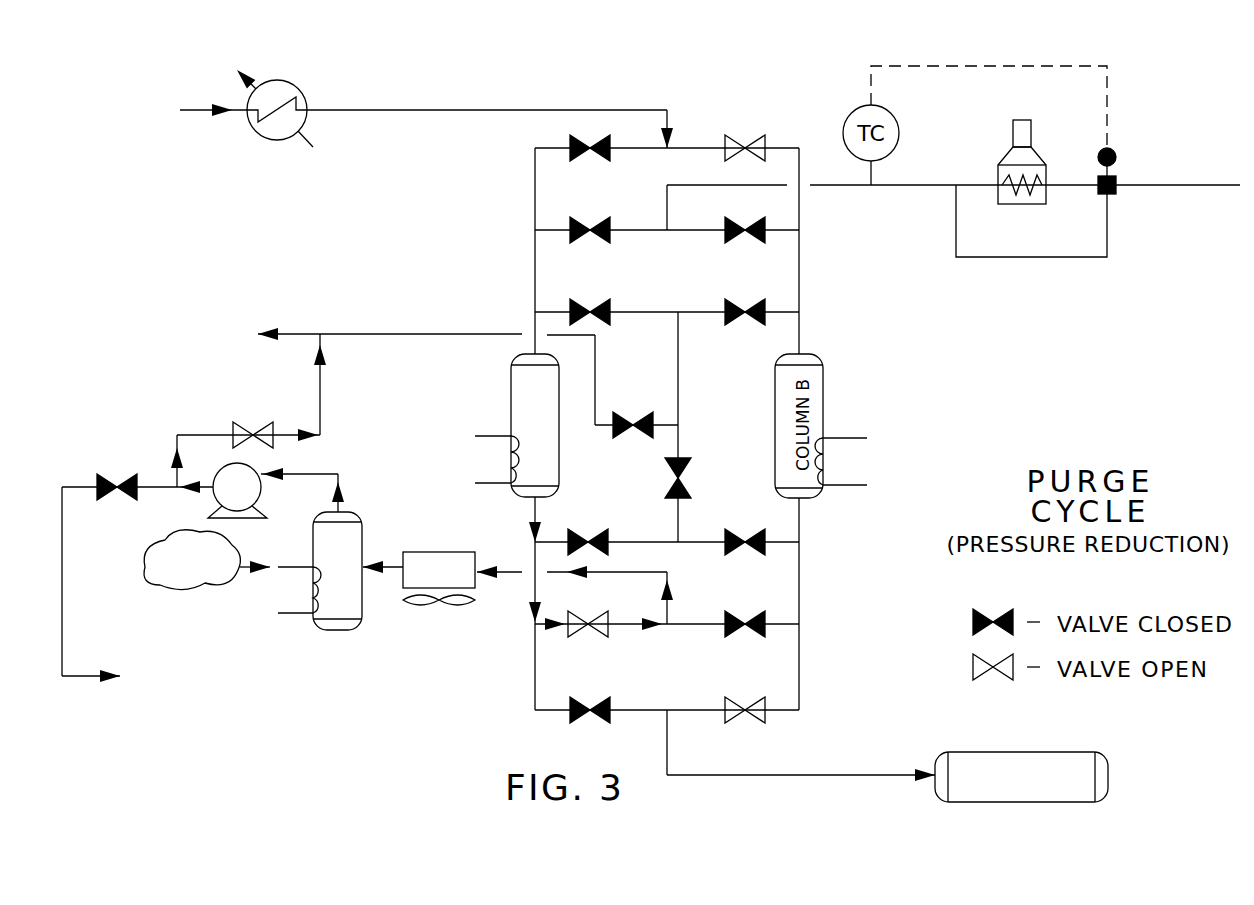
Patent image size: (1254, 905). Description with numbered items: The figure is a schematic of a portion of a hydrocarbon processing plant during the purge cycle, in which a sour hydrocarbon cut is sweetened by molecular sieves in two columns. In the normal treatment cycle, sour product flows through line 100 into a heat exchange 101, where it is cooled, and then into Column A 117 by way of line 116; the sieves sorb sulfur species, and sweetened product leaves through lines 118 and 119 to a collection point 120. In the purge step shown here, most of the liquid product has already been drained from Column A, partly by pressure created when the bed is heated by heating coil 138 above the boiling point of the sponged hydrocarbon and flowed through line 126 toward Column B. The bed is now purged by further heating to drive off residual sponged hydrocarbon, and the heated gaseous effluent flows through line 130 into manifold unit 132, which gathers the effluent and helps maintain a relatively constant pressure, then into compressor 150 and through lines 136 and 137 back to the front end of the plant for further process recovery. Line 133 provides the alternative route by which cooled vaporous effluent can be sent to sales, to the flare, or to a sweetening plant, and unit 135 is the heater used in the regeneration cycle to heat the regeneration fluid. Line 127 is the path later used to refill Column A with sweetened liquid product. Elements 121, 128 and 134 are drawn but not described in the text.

The line 100 is at (203, 105).
The heat exchange 101 is at (298, 88).
The line 116 is at (535, 210).
The Column A 117 is at (511, 415).
The line 118 is at (535, 672).
The line 119 is at (667, 730).
The collection point 120 is at (985, 752).
The column B header 121 is at (799, 210).
The line 126 is at (678, 385).
The line 127 is at (618, 542).
The purge valve line 128 is at (688, 628).
The line 130 is at (507, 568).
The manifold unit 132 is at (362, 617).
The line 133 is at (150, 488).
The pressure control valve 134 is at (1128, 188).
The unit 135 is at (998, 175).
The line 136 is at (320, 410).
The line 137 is at (291, 334).
The heating coil 138 is at (490, 483).
The compressor 150 is at (222, 518).